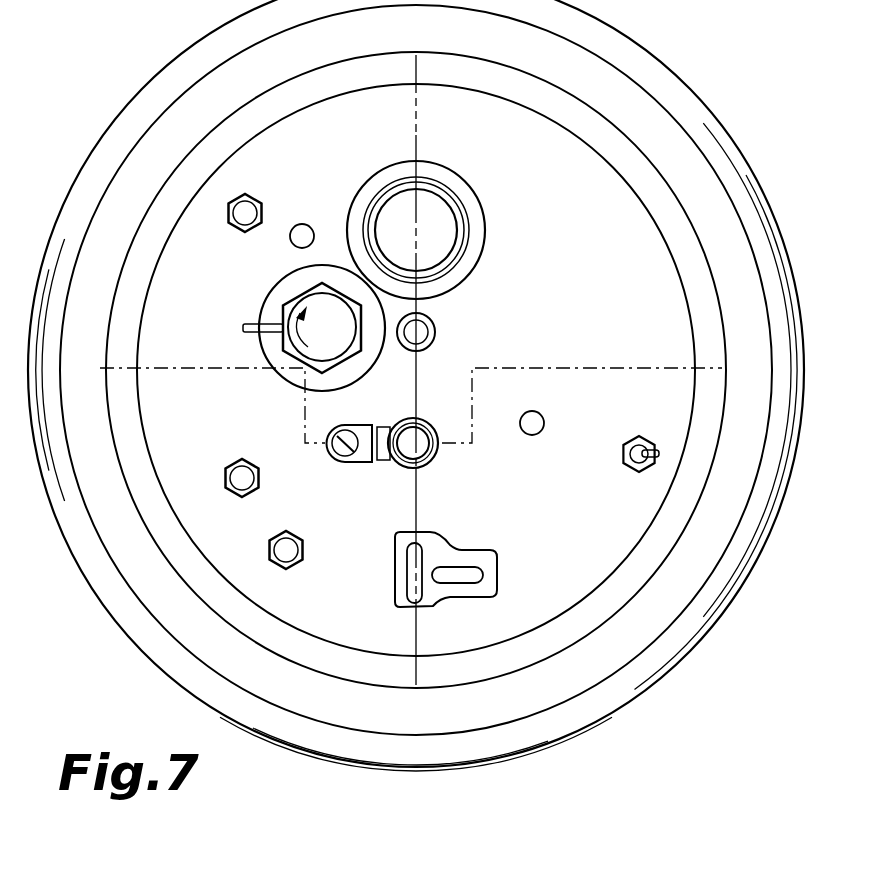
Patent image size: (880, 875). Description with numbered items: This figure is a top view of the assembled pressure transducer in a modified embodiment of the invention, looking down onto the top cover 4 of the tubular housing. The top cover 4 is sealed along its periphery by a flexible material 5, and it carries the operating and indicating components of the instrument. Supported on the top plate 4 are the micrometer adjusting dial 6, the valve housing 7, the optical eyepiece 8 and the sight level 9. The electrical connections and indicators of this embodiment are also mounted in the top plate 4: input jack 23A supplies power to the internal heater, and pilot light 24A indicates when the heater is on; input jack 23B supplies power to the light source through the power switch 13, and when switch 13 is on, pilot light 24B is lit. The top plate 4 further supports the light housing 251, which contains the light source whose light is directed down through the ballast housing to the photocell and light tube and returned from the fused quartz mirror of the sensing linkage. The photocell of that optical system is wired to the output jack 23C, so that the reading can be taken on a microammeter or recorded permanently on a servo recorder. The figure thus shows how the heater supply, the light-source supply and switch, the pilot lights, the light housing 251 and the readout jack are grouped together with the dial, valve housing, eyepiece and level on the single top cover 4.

The top cover 4 is at (545, 140).
The flexible material 5 is at (635, 180).
The micrometer adjusting dial 6 is at (470, 212).
The valve housing 7 is at (300, 342).
The optical eyepiece 8 is at (122, 320).
The sight level 9 is at (447, 553).
The power switch 13 is at (633, 468).
The input jack 23A is at (245, 207).
The input jack 23B is at (246, 481).
The output jack 23C is at (289, 552).
The pilot light 24A is at (298, 241).
The pilot light 24B is at (540, 417).
The light housing 251 is at (418, 447).